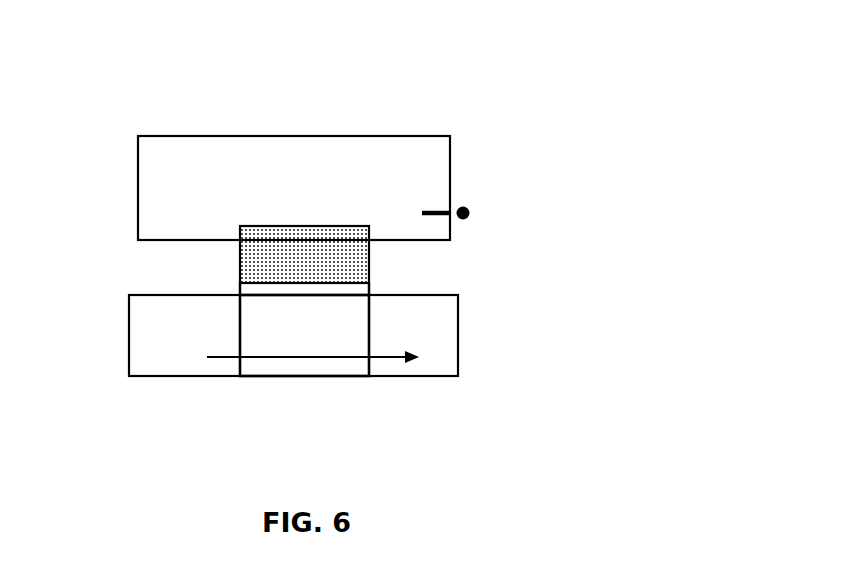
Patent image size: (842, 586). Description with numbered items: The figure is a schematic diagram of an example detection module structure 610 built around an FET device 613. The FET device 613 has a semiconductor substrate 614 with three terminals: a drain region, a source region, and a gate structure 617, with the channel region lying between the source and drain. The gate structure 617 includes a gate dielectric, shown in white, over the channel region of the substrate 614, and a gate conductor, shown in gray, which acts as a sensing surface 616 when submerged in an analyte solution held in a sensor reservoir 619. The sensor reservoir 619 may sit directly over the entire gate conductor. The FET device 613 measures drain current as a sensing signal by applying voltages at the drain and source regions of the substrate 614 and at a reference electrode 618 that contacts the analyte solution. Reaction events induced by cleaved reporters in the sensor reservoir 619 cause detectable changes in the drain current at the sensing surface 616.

The transistor device 610 is at (349, 118).
The FET device 613 is at (212, 430).
The semiconductor substrate 614 is at (299, 376).
The sensing surface 616 is at (322, 228).
The gate structure 617 is at (214, 258).
The reference electrode 618 is at (469, 210).
The sensor reservoir 619 is at (452, 136).